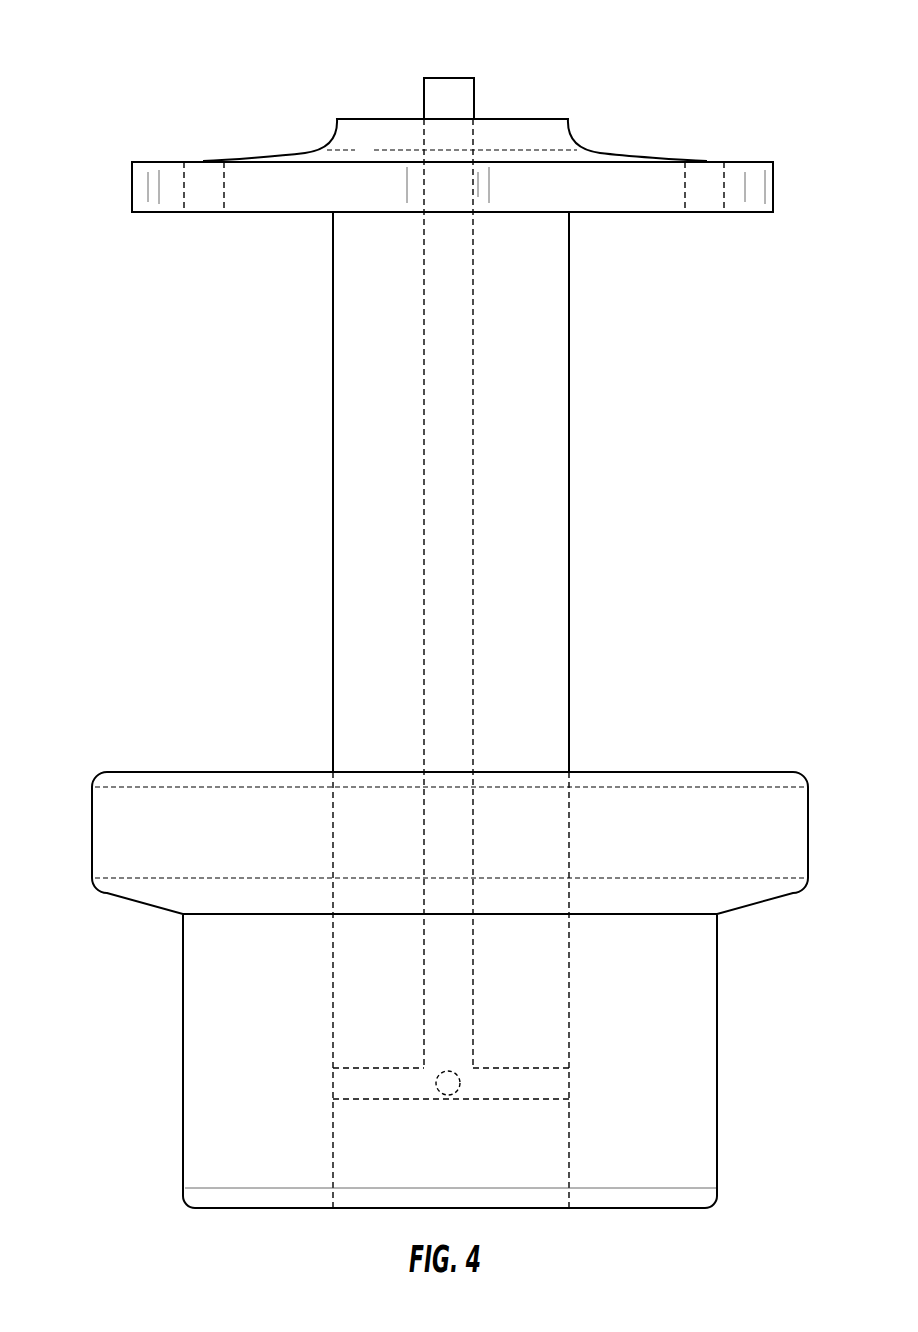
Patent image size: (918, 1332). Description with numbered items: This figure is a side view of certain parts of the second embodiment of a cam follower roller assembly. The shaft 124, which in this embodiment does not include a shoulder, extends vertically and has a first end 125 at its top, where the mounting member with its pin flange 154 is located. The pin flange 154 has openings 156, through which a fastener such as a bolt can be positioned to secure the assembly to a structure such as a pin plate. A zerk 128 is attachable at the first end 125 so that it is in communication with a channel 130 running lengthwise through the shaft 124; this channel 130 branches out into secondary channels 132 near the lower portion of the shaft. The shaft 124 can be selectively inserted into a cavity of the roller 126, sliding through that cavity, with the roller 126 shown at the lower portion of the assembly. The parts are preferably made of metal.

The shaft 124 is at (354, 444).
The first end 125 is at (337, 119).
The roller 126 is at (112, 830).
The zerk 128 is at (420, 78).
The channel 130 is at (437, 617).
The secondary channels 132 is at (347, 1087).
The pin flange 154 is at (735, 172).
The openings 156 is at (203, 161).